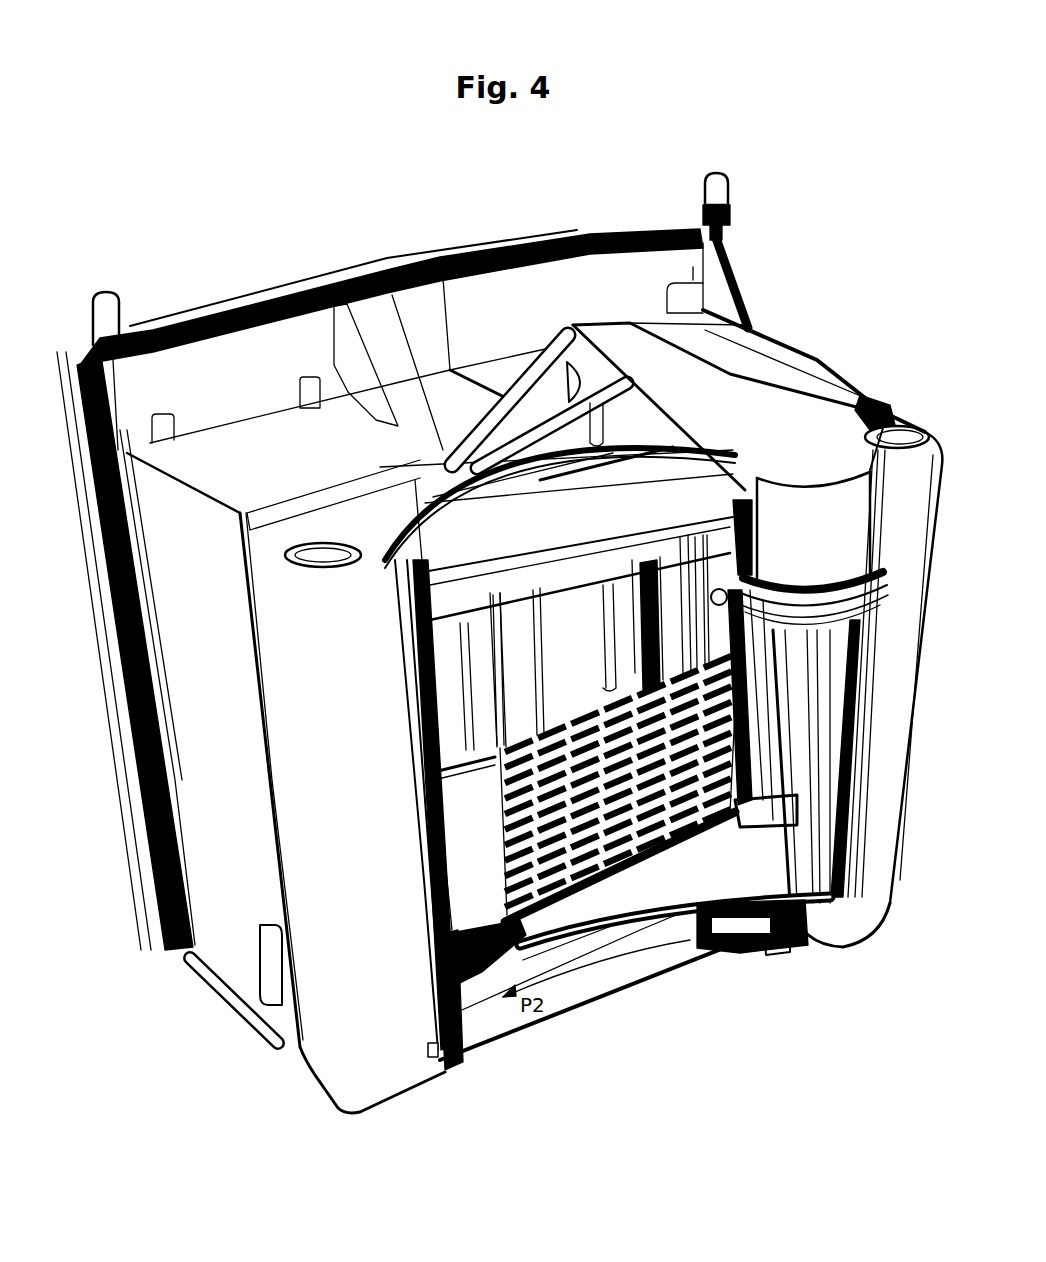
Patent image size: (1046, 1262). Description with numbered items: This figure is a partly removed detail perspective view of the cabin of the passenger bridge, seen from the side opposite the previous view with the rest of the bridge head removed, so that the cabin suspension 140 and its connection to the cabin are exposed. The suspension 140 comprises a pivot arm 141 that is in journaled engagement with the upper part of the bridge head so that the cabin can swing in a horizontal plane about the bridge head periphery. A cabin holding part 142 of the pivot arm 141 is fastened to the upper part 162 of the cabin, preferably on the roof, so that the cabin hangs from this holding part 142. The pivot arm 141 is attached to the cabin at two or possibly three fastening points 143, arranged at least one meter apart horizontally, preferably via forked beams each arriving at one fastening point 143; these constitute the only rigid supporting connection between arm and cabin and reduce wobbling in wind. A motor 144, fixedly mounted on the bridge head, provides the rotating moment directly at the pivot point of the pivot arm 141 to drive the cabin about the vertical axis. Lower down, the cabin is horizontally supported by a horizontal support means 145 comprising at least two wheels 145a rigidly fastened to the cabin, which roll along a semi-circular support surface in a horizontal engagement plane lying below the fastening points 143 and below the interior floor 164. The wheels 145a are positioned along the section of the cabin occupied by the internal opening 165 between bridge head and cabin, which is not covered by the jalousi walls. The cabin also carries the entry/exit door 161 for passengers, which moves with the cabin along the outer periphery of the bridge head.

The cabin suspension 140 is at (822, 418).
The pivot arm 141 is at (730, 449).
The cabin holding part 142 is at (533, 383).
The fastening points 143 is at (447, 465).
The motor 144 is at (812, 548).
The horizontal support means 145 is at (690, 923).
The wheels 145a is at (773, 950).
The entry/exit door 161 is at (573, 897).
The upper part of the cabin 162 is at (350, 408).
The interior floor 164 is at (619, 786).
The internal opening 165 is at (793, 877).